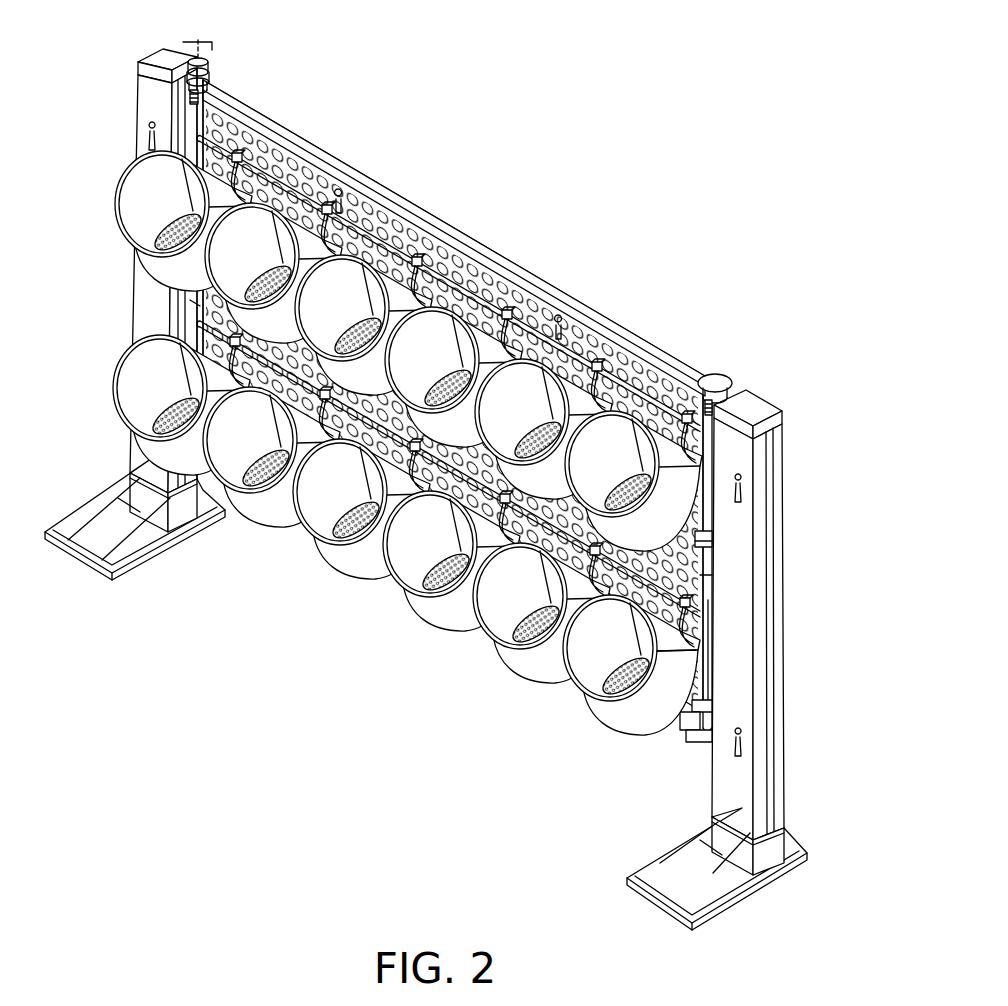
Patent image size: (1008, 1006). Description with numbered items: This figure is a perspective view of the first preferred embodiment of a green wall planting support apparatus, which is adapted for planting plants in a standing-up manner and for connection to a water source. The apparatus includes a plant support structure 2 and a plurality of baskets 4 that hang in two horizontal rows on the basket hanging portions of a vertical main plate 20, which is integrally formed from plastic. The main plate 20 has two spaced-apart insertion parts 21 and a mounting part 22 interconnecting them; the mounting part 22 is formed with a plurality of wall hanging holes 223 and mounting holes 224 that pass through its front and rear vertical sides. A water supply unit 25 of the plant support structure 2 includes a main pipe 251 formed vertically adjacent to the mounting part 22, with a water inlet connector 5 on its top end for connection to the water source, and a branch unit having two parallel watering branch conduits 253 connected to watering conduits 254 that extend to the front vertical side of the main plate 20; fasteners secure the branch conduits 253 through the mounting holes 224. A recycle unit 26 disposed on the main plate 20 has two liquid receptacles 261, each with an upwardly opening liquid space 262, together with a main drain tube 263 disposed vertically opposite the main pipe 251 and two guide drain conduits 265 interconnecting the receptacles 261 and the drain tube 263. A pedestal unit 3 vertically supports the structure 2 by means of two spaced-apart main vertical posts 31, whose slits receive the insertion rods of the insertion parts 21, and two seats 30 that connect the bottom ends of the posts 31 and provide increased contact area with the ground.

The plant support structure 2 is at (468, 419).
The vertical main plate 20 is at (566, 332).
The insertion parts 21 is at (200, 95).
The mounting part 22 is at (352, 206).
The wall hanging holes 223 is at (343, 195).
The mounting holes 224 is at (602, 600).
The water supply unit 25 is at (218, 130).
The main pipe 251 is at (192, 302).
The watering branch conduits 253 is at (405, 260).
The watering conduits 254 is at (583, 367).
The recycle unit 26 is at (706, 497).
The liquid receptacles 261 is at (705, 545).
The liquid space 262 is at (705, 537).
The main drain tube 263 is at (710, 632).
The guide drain conduits 265 is at (708, 580).
The pedestal unit 3 is at (795, 476).
The seats 30 is at (127, 558).
The main vertical posts 31 is at (152, 100).
The baskets 4 is at (403, 600).
The water inlet connector 5 is at (205, 78).